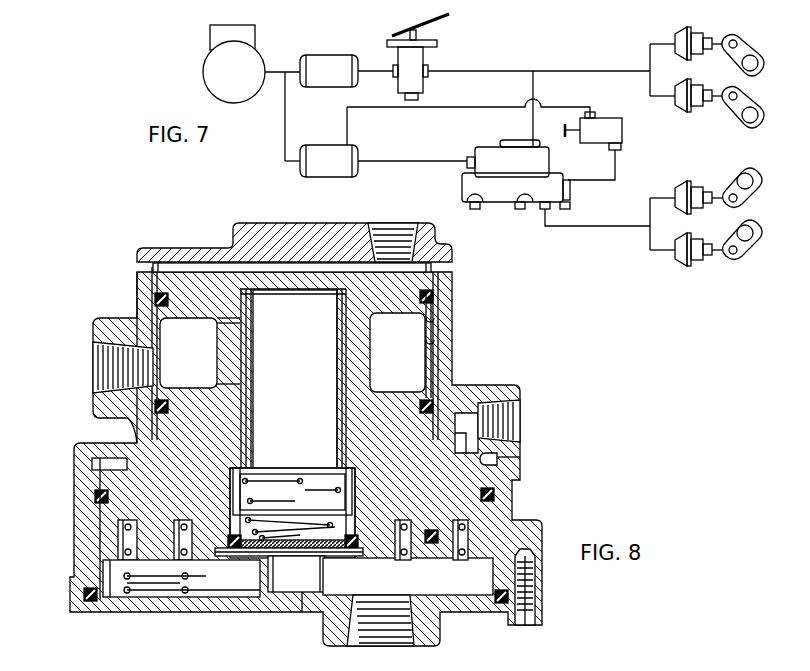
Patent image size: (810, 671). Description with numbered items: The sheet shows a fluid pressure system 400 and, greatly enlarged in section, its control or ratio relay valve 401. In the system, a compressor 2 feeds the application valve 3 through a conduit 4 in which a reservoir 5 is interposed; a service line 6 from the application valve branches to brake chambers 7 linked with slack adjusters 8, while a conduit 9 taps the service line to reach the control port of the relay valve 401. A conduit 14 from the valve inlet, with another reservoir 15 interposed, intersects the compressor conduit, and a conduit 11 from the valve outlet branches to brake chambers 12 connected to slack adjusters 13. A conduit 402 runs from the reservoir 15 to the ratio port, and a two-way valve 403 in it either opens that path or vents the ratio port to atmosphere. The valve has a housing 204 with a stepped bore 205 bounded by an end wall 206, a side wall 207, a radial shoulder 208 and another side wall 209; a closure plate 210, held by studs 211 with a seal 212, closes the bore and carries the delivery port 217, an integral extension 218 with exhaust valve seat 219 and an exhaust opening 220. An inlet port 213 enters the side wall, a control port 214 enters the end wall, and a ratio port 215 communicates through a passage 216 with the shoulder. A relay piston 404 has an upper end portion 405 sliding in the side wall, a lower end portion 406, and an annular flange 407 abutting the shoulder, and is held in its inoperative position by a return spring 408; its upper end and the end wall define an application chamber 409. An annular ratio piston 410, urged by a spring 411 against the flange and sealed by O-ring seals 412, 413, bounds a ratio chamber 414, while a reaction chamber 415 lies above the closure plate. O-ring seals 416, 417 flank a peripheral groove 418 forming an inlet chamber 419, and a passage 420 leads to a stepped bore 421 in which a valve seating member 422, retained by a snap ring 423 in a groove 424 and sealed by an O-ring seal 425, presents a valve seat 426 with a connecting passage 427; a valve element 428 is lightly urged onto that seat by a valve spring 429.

In FIG. 7, the fluid pressure system 400 is at (178, 72).
In FIG. 7, the compressor 2 is at (210, 37).
In FIG. 7, the reservoir 5 is at (327, 56).
In FIG. 7, the reservoir 15 is at (322, 145).
In FIG. 7, the conduit 4 is at (373, 67).
In FIG. 7, the application valve 3 is at (420, 79).
In FIG. 7, the conduit or service line 6 is at (484, 66).
In FIG. 7, the conduit 9 is at (531, 86).
In FIG. 7, the conduit 402 is at (480, 112).
In FIG. 7, the two-way or push-pull valve 403 is at (622, 131).
In FIG. 7, the conduit 14 is at (397, 160).
In FIG. 7, the control or ratio relay valve 401 is at (540, 161).
In FIG. 8, the control or ratio relay valve 401 is at (512, 358).
In FIG. 7, the conduit 11 is at (597, 227).
In FIG. 7, the servo motors or brake chambers 7 is at (696, 58).
In FIG. 7, the slack adjusters 8 is at (758, 72).
In FIG. 7, the servo motors or brake chambers 12 is at (695, 211).
In FIG. 7, the slack adjusters 13 is at (758, 190).
In FIG. 8, the housing 204 is at (450, 263).
In FIG. 8, the end wall 206 is at (178, 265).
In FIG. 8, the control or application chamber 409 is at (296, 262).
In FIG. 8, the control port 214 is at (397, 233).
In FIG. 8, the upper end portion 405 is at (157, 272).
In FIG. 8, the O-ring seal 417 is at (155, 298).
In FIG. 8, the O-ring seal 416 is at (168, 409).
In FIG. 8, the relay piston 404 is at (374, 300).
In FIG. 8, the inlet or reservoir port 213 is at (95, 345).
In FIG. 8, the peripheral groove 418 is at (200, 353).
In FIG. 8, the inlet chamber 419 is at (173, 380).
In FIG. 8, the stepped bore or valve chamber 421 is at (341, 309).
In FIG. 8, the passage 420 is at (232, 326).
In FIG. 8, the side wall 207 is at (438, 345).
In FIG. 8, the stepped bore 205 is at (438, 323).
In FIG. 8, the passage 216 is at (467, 415).
In FIG. 8, the control or ratio port 215 is at (521, 408).
In FIG. 8, the radially extending shoulder 208 is at (497, 458).
In FIG. 8, the valve spring 429 is at (320, 468).
In FIG. 8, the annular flange 407 is at (150, 465).
In FIG. 8, the valve element 428 is at (251, 491).
In FIG. 8, the valve seat 426 is at (291, 523).
In FIG. 8, the valve seating member 422 is at (356, 494).
In FIG. 8, the O-ring seal 425 is at (353, 532).
In FIG. 8, the groove 424 is at (386, 578).
In FIG. 8, the snap ring 423 is at (335, 556).
In FIG. 8, the exhaust valve seat 219 is at (296, 556).
In FIG. 8, the lower end portion 406 is at (436, 562).
In FIG. 8, the O-ring seal 413 is at (160, 527).
In FIG. 8, the connecting passage 427 is at (262, 582).
In FIG. 8, the reaction or outlet chamber 415 is at (164, 598).
In FIG. 8, the return spring 408 is at (196, 592).
In FIG. 8, the annular ratio chamber 414 is at (96, 462).
In FIG. 8, the O-ring seal 412 is at (97, 497).
In FIG. 8, the annular ratio piston 410 is at (108, 525).
In FIG. 8, the spring 411 is at (127, 551).
In FIG. 8, the side wall 209 is at (97, 590).
In FIG. 8, the closure housing or plate 210 is at (106, 612).
In FIG. 8, the integral extension 218 is at (255, 612).
In FIG. 8, the exhaust passage or opening 220 is at (308, 602).
In FIG. 8, the outlet or delivery port 217 is at (405, 640).
In FIG. 8, the seal 212 is at (499, 604).
In FIG. 8, the studs 211 is at (542, 616).